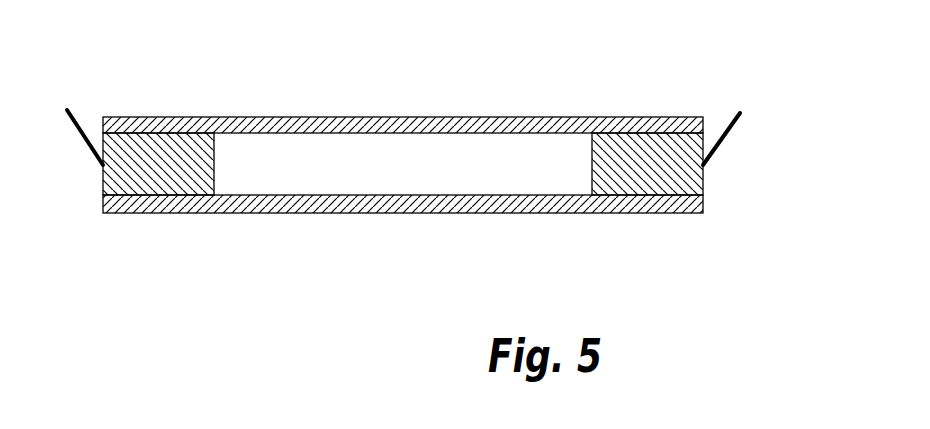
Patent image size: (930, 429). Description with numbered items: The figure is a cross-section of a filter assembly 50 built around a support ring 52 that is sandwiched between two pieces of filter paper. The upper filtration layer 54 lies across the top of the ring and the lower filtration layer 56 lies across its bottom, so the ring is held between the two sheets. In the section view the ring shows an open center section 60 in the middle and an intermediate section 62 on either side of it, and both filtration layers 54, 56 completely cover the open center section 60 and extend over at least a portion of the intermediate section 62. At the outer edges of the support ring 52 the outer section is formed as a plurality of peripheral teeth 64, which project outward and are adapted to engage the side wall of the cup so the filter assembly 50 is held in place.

The filter assembly 50 is at (192, 287).
The support ring 52 is at (631, 155).
The upper filtration layer 54 is at (309, 117).
The lower filtration layer 56 is at (498, 213).
The open center section 60 is at (370, 165).
The intermediate section 62 is at (160, 165).
The peripheral teeth 64 is at (417, 179).